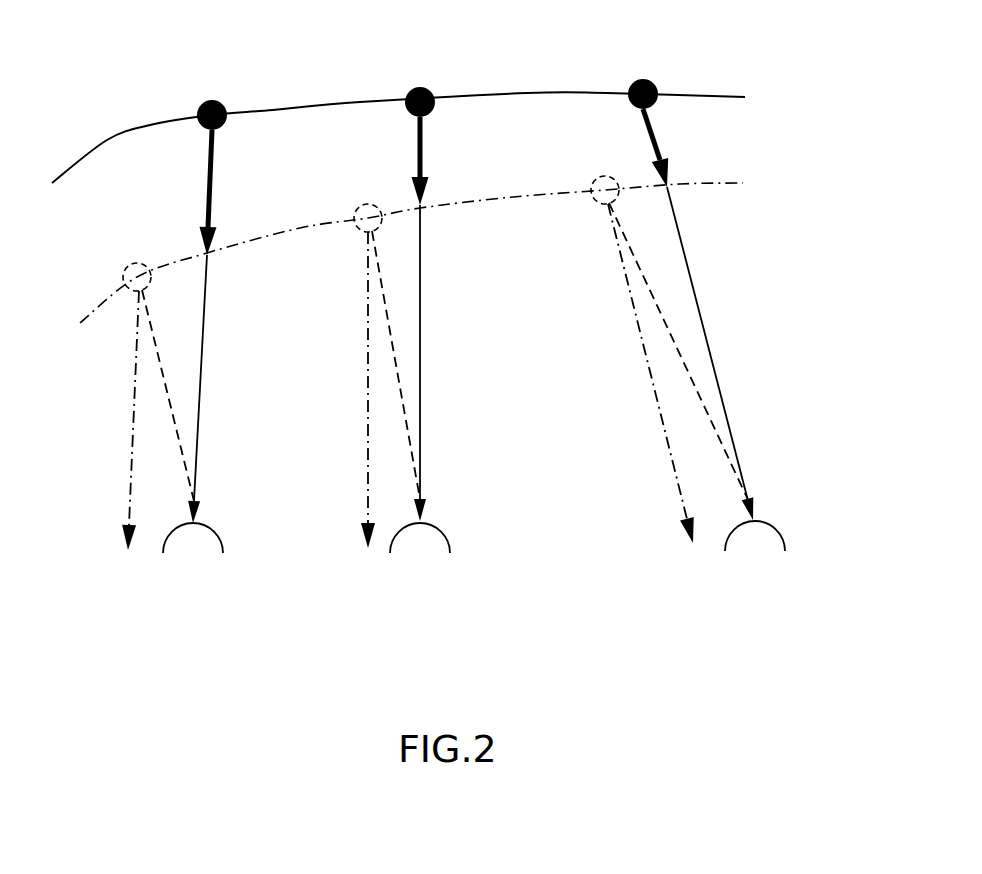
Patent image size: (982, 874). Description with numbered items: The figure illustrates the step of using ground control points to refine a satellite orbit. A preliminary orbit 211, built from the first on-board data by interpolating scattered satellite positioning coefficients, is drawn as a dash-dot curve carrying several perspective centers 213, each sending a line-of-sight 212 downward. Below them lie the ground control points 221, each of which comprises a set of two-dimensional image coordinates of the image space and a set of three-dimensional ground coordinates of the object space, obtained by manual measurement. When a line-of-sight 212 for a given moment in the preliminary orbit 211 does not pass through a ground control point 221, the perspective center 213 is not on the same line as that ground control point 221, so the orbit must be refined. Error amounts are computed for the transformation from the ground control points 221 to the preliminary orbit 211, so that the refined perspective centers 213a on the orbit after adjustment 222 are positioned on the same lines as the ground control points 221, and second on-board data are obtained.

The preliminary orbit 211 is at (732, 190).
The line-of-sight 212 is at (367, 408).
The perspective center 213 is at (368, 204).
The perspective center 213a is at (420, 87).
The ground control point 221 is at (420, 548).
The orbit after adjustment 222 is at (724, 82).